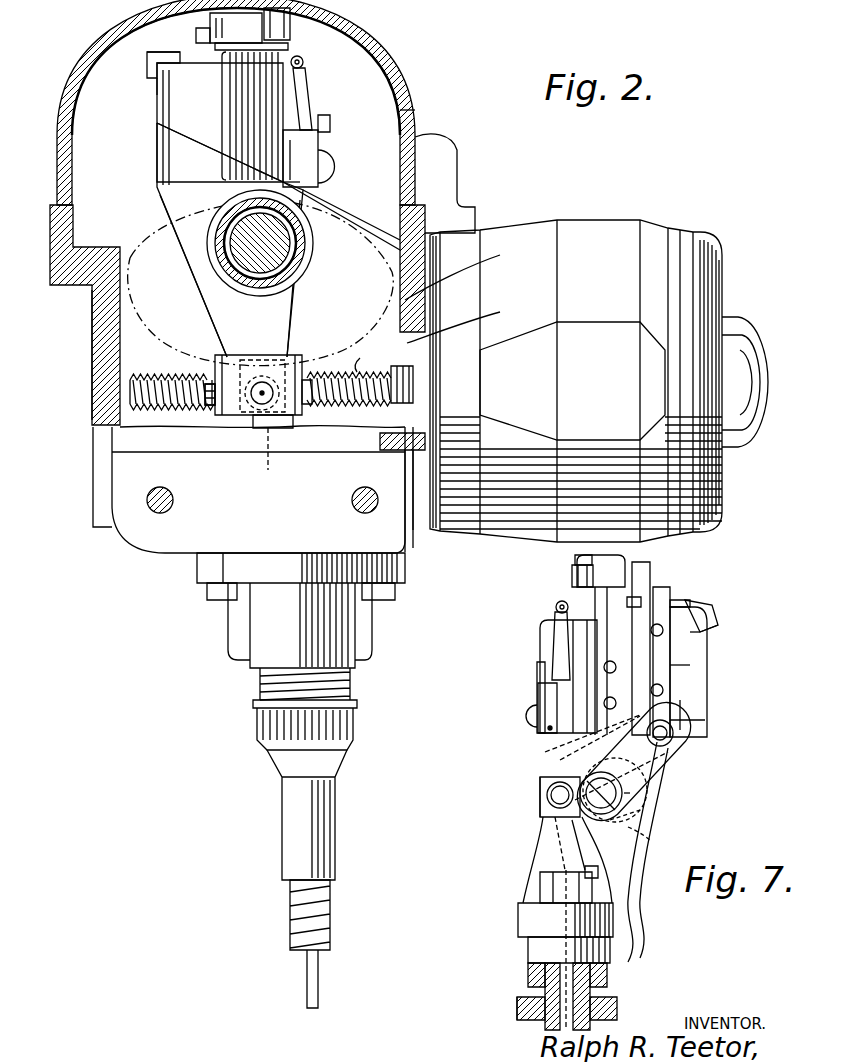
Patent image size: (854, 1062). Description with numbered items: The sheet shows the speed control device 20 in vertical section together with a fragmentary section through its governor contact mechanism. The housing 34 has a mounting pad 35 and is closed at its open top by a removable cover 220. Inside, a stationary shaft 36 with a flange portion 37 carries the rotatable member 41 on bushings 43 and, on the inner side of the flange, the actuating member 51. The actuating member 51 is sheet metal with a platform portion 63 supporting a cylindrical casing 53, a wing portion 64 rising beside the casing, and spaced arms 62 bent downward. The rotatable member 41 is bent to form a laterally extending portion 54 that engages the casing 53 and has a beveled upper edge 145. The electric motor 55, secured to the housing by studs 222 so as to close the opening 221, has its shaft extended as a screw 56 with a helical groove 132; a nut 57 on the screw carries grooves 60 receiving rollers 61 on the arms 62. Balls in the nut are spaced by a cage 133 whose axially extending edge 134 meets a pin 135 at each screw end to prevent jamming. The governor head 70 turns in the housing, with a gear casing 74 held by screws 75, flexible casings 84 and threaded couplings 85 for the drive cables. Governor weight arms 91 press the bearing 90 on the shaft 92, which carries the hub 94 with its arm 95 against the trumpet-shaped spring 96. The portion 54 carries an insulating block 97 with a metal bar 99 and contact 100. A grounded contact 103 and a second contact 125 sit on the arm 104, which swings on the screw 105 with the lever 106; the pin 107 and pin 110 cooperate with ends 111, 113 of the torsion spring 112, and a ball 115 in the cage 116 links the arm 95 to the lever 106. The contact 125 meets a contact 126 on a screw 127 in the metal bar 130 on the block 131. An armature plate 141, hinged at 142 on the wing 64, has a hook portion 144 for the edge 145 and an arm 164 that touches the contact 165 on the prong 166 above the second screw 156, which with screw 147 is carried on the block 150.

In FIG. 2, the device 20 is at (418, 70).
In FIG. 2, the housing 34 is at (100, 333).
In FIG. 2, the mounting pad 35 is at (145, 543).
In FIG. 2, the stationary shaft 36 is at (237, 246).
In FIG. 2, the flange portion 37 is at (150, 238).
In FIG. 2, the rotatable member 41 is at (170, 172).
In FIG. 7, the rotatable member 41 is at (690, 745).
In FIG. 2, the bushings 43 is at (240, 268).
In FIG. 2, the actuating member 51 is at (320, 208).
In FIG. 2, the cylindrical casing 53 is at (157, 124).
In FIG. 2, the laterally extending portion 54 is at (163, 103).
In FIG. 7, the laterally extending portion 54 is at (697, 692).
In FIG. 2, the electric motor 55 is at (610, 230).
In FIG. 2, the screw 56 is at (343, 402).
In FIG. 2, the nut 57 is at (288, 422).
In FIG. 2, the grooves 60 is at (256, 430).
In FIG. 2, the rollers 61 is at (250, 465).
In FIG. 2, the spaced arms 62 is at (285, 326).
In FIG. 7, the spaced arms 62 is at (632, 902).
In FIG. 2, the platform portion 63 is at (248, 172).
In FIG. 2, the wing portion 64 is at (300, 165).
In FIG. 7, the head 70 is at (517, 1008).
In FIG. 2, the gear casing 74 is at (250, 630).
In FIG. 2, the screws 75 is at (207, 594).
In FIG. 2, the flexible casings 84 is at (292, 906).
In FIG. 2, the threaded couplings 85 is at (258, 728).
In FIG. 7, the bearing 90 is at (535, 948).
In FIG. 7, the arms 91 is at (528, 978).
In FIG. 7, the shaft 92 is at (617, 1008).
In FIG. 7, the hub 94 is at (525, 918).
In FIG. 7, the arm 95 is at (538, 840).
In FIG. 7, the trumpet-shaped spring 96 is at (540, 888).
In FIG. 7, the insulating block 97 is at (680, 707).
In FIG. 7, the metal bar 99 is at (670, 673).
In FIG. 7, the contact 100 is at (690, 603).
In FIG. 7, the contact 103 is at (672, 592).
In FIG. 2, the arm 104 is at (198, 39).
In FIG. 7, the arm 104 is at (642, 600).
In FIG. 7, the screw 105 is at (650, 837).
In FIG. 7, the lever 106 is at (690, 790).
In FIG. 7, the pin 107 is at (672, 740).
In FIG. 7, the pin 110 is at (675, 720).
In FIG. 7, the end 111 is at (545, 752).
In FIG. 7, the torsion spring 112 is at (655, 815).
In FIG. 7, the end 113 is at (630, 785).
In FIG. 7, the ball 115 is at (545, 795).
In FIG. 7, the cage 116 is at (540, 805).
In FIG. 2, the second contact 125 is at (262, 47).
In FIG. 7, the second contact 125 is at (645, 560).
In FIG. 2, the contact 126 is at (236, 28).
In FIG. 7, the contact 126 is at (575, 556).
In FIG. 2, the screw 127 is at (291, 24).
In FIG. 7, the screw 127 is at (572, 576).
In FIG. 2, the metal bar 130 is at (258, 72).
In FIG. 7, the metal bar 130 is at (595, 598).
In FIG. 7, the block 131 is at (580, 647).
In FIG. 2, the helical groove 132 is at (379, 368).
In FIG. 2, the cage 133 is at (212, 403).
In FIG. 2, the edge 134 is at (215, 366).
In FIG. 2, the pin 135 is at (130, 383).
In FIG. 2, the armature plate 141 is at (147, 55).
In FIG. 7, the armature plate 141 is at (712, 614).
In FIG. 2, the hinge 142 is at (305, 58).
In FIG. 7, the hinge 142 is at (556, 610).
In FIG. 2, the hook portion 144 is at (147, 70).
In FIG. 7, the hook portion 144 is at (714, 628).
In FIG. 2, the beveled upper edge 145 is at (157, 82).
In FIG. 7, the beveled upper edge 145 is at (702, 640).
In FIG. 2, the screw 147 is at (296, 170).
In FIG. 2, the block 150 is at (302, 184).
In FIG. 7, the block 150 is at (548, 729).
In FIG. 7, the second screw 156 is at (528, 715).
In FIG. 2, the arm 164 is at (312, 88).
In FIG. 7, the arm 164 is at (553, 640).
In FIG. 2, the contact 165 is at (330, 118).
In FIG. 7, the contact 165 is at (537, 672).
In FIG. 2, the prong 166 is at (320, 138).
In FIG. 7, the prong 166 is at (538, 688).
In FIG. 2, the removable cover 220 is at (410, 108).
In FIG. 2, the opening 221 is at (474, 319).
In FIG. 2, the studs 222 is at (473, 269).